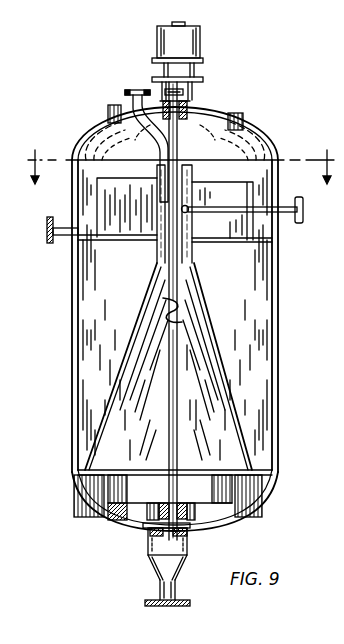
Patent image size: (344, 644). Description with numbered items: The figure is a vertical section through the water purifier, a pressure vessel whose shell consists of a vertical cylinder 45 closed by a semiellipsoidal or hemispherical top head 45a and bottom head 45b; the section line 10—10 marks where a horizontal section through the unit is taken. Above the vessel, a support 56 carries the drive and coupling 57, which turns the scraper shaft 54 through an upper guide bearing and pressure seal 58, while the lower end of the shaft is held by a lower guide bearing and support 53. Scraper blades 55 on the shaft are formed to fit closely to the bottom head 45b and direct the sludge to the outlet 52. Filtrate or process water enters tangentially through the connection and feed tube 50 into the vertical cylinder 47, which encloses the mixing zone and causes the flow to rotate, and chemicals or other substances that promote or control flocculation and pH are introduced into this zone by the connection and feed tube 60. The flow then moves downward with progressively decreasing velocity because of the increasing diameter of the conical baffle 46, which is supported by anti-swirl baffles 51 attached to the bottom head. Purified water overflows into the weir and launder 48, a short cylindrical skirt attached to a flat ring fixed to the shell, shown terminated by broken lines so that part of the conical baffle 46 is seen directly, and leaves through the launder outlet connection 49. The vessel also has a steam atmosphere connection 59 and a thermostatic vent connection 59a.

The section line 10 is at (181, 177).
The vertical cylinder 45 is at (281, 333).
The vessel dome top 45a is at (256, 122).
The bottom head 45b is at (246, 513).
The conical baffle 46 is at (216, 338).
The vertical cylinder 47 is at (192, 255).
The purified water overflow weir and launder 48 is at (90, 238).
The launder outlet connection 49 is at (45, 233).
The connection and feed tube 50 is at (226, 205).
The anti-swirl baffles 51 is at (129, 458).
The outlet 52 is at (190, 551).
The lower guide bearing and support 53 is at (156, 546).
The scraper shaft 54 is at (177, 388).
The scraper blades 55 is at (165, 500).
The support 56 is at (205, 97).
The drive and coupling 57 is at (194, 90).
The upper guide bearing and pressure seal 58 is at (186, 118).
The steam atmosphere connection 59 is at (243, 112).
The thermostatic vent connection 59a is at (114, 107).
The connection and feed tube 60 is at (140, 78).